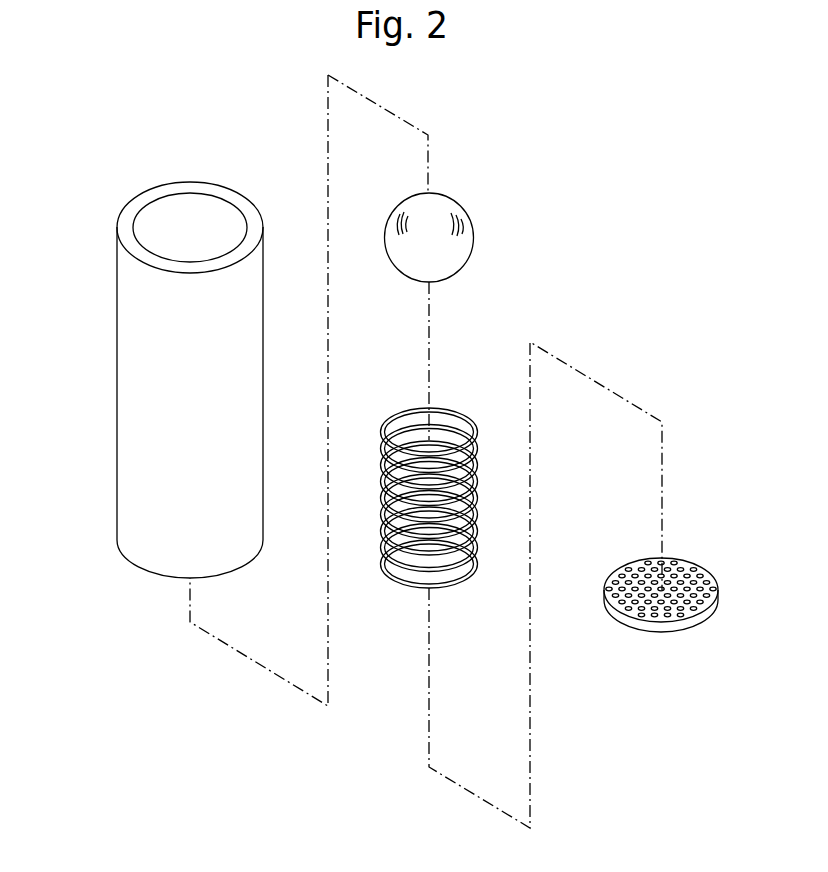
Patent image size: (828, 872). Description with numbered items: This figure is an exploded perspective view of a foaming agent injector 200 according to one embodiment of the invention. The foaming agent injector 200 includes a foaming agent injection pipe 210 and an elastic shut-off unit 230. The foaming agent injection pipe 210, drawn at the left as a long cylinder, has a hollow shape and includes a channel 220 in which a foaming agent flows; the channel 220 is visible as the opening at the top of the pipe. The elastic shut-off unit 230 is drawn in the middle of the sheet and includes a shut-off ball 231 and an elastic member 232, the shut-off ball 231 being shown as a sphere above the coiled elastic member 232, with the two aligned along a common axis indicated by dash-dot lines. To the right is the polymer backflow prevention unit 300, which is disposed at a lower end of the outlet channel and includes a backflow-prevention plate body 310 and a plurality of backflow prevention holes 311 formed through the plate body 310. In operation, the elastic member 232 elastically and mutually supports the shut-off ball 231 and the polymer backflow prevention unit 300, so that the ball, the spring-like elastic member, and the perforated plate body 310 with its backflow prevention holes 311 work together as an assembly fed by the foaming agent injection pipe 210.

The foaming agent injector 200 is at (168, 321).
The foaming agent injection pipe 210 is at (135, 397).
The channel 220 is at (180, 223).
The elastic shut-off unit 230 is at (492, 360).
The shut-off ball 231 is at (443, 232).
The elastic member 232 is at (458, 410).
The polymer backflow prevention unit 300 is at (677, 540).
The backflow-prevention plate body 310 is at (683, 558).
The backflow prevention holes 311 is at (670, 547).